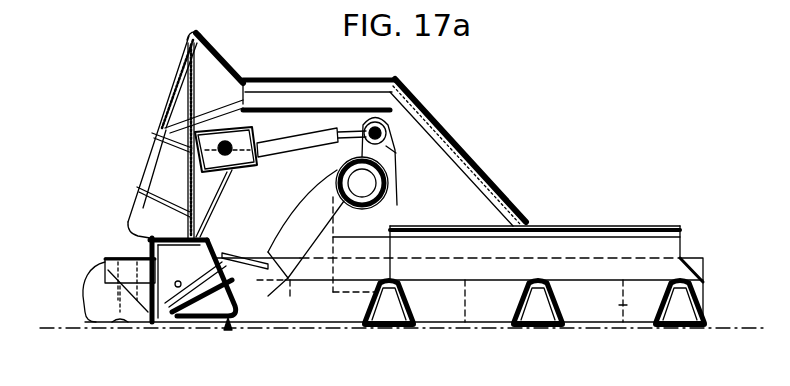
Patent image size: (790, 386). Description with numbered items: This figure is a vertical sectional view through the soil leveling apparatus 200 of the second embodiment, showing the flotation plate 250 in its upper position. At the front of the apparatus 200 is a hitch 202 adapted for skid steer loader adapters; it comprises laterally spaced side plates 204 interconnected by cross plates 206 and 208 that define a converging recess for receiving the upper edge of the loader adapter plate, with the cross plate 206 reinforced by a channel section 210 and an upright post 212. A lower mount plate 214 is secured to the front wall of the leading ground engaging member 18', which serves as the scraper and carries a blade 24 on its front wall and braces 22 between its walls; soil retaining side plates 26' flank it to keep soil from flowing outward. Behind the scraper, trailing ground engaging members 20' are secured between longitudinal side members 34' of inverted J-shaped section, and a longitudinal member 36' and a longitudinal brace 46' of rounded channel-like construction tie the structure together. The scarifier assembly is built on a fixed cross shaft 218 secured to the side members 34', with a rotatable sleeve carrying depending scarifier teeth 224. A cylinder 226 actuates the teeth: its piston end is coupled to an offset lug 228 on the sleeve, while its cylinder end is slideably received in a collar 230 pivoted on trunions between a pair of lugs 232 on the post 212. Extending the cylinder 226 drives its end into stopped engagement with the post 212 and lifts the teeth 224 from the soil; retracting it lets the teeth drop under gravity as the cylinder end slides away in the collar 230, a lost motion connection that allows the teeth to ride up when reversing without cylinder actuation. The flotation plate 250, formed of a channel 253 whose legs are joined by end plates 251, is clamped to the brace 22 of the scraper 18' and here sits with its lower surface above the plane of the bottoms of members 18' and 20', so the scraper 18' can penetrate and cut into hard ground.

The soil leveling apparatus 200 is at (472, 121).
The hitch 202 is at (162, 64).
The side plates 204 is at (139, 168).
The cross plate 206 is at (182, 90).
The cross plate 208 is at (192, 43).
The channel section 210 is at (215, 68).
The upright post 212 is at (198, 202).
The lower mount plates 214 is at (117, 265).
The fixed cross shaft 218 is at (385, 198).
The scarifier teeth 224 is at (262, 290).
The cylinder 226 is at (302, 140).
The offset lug 228 is at (391, 151).
The collar 230 is at (240, 165).
The lugs 232 is at (207, 158).
The flotation plate 250 is at (228, 332).
The plates 251 is at (260, 257).
The channel 253 is at (180, 312).
The leading ground engaging member 18' is at (193, 297).
The trailing ground engaging members 20' is at (534, 319).
The braces 22 is at (150, 312).
The blade 24 is at (120, 322).
The side plates 26' is at (94, 284).
The longitudinal side members 34' is at (710, 290).
The longitudinal member 36' is at (394, 258).
The longitudinal brace 46' is at (458, 149).